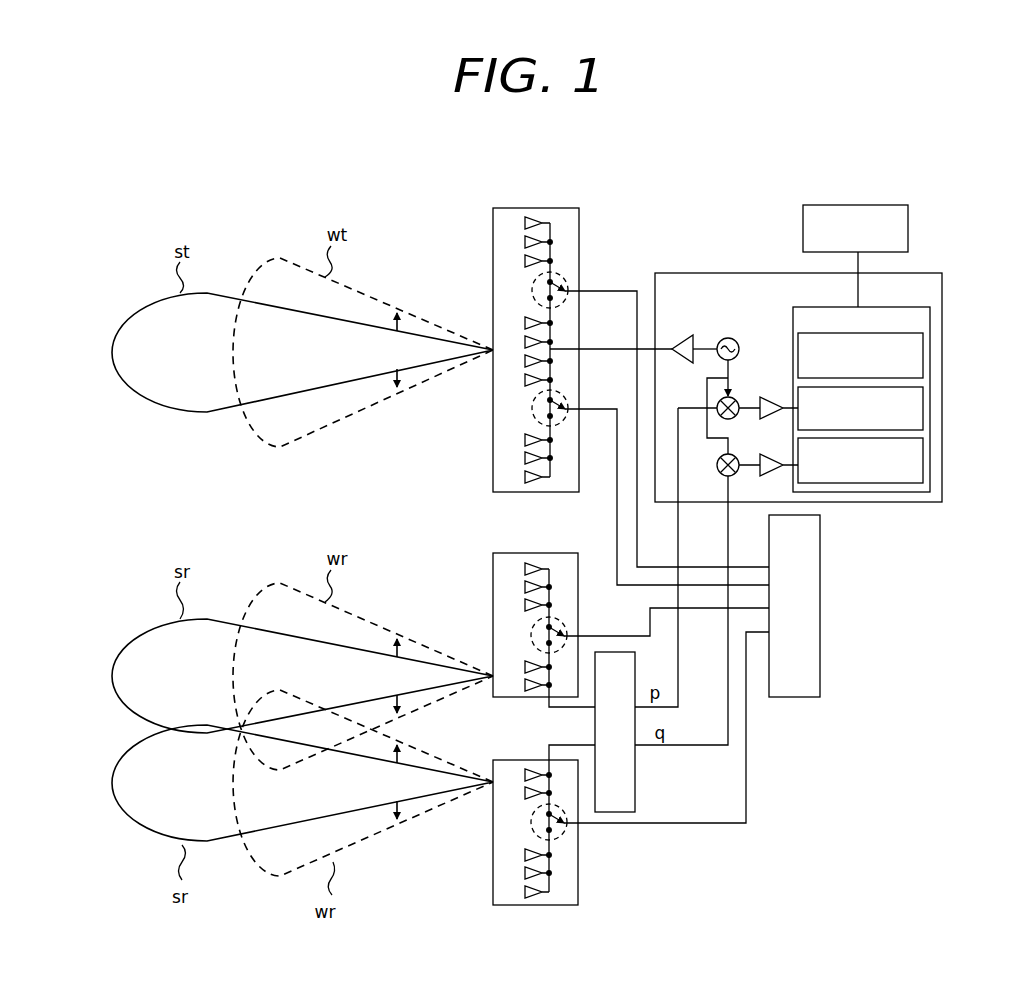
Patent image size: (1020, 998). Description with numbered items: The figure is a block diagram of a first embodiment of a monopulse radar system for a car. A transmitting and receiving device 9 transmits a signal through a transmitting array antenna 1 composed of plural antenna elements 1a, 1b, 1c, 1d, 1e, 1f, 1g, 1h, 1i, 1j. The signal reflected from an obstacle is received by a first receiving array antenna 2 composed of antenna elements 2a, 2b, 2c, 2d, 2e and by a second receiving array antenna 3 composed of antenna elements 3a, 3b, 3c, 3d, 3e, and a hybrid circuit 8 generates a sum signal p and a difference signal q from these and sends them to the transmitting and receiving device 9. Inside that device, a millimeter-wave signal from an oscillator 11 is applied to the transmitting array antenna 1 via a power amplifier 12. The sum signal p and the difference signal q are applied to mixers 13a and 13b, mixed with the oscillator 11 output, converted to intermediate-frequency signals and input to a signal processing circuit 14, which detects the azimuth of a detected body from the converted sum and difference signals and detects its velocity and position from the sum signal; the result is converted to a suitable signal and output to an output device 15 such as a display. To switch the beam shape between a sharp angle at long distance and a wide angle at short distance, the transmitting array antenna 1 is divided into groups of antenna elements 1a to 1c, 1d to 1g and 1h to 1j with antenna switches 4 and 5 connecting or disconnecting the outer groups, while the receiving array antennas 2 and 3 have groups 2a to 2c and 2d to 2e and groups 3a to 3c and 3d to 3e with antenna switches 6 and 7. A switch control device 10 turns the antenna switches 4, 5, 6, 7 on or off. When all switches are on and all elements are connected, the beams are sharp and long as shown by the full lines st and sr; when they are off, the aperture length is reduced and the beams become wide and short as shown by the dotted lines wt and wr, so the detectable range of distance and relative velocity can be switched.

The transmitting array antenna 1 is at (565, 208).
The antenna element 1a is at (526, 222).
The antenna element 1b is at (527, 241).
The antenna element 1c is at (527, 260).
The antenna element 1d is at (527, 322).
The antenna element 1e is at (527, 341).
The antenna element 1f is at (527, 360).
The antenna element 1g is at (527, 379).
The antenna element 1h is at (527, 439).
The antenna element 1i is at (527, 457).
The antenna element 1j is at (526, 476).
The first receiving array antenna 2 is at (562, 553).
The antenna element 2a is at (525, 568).
The antenna element 2b is at (526, 586).
The antenna element 2c is at (526, 604).
The antenna element 2d is at (526, 666).
The antenna element 2e is at (526, 684).
The second receiving array antenna 3 is at (560, 905).
The antenna element 3a is at (525, 891).
The antenna element 3b is at (526, 872).
The antenna element 3c is at (526, 854).
The antenna element 3d is at (526, 792).
The antenna element 3e is at (526, 774).
The antenna switch 4 is at (574, 284).
The antenna switch 5 is at (567, 426).
The antenna switch 6 is at (572, 627).
The antenna switch 7 is at (567, 843).
The hybrid circuit 8 is at (637, 795).
The transmitting and receiving device 9 is at (706, 273).
The switch control device 10 is at (782, 697).
The oscillator 11 is at (733, 338).
The power amplifier 12 is at (688, 335).
The mixer 13a is at (736, 396).
The mixer 13b is at (718, 469).
The signal processing circuit 14 is at (888, 308).
The output device 15 is at (879, 205).